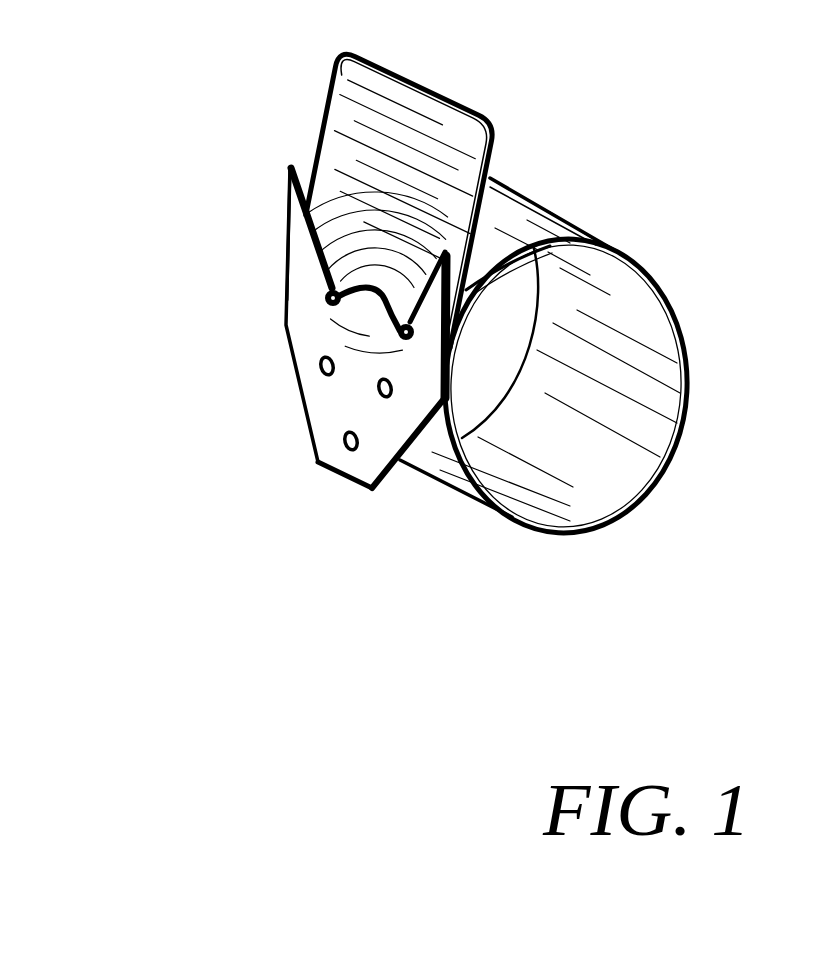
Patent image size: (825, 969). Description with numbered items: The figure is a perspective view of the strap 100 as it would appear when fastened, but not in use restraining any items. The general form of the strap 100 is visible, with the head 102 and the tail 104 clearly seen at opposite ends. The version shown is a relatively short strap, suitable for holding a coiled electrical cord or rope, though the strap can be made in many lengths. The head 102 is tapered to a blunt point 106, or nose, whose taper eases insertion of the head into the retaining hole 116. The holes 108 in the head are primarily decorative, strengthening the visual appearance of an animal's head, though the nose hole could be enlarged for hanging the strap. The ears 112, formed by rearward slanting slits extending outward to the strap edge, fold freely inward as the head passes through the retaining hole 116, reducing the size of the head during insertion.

The strap 100 is at (630, 256).
The head 102 is at (284, 333).
The tail 104 is at (323, 135).
The blunt point 106 is at (313, 467).
The holes 108 is at (320, 370).
The ears 112 is at (287, 216).
The retaining hole 116 is at (327, 283).